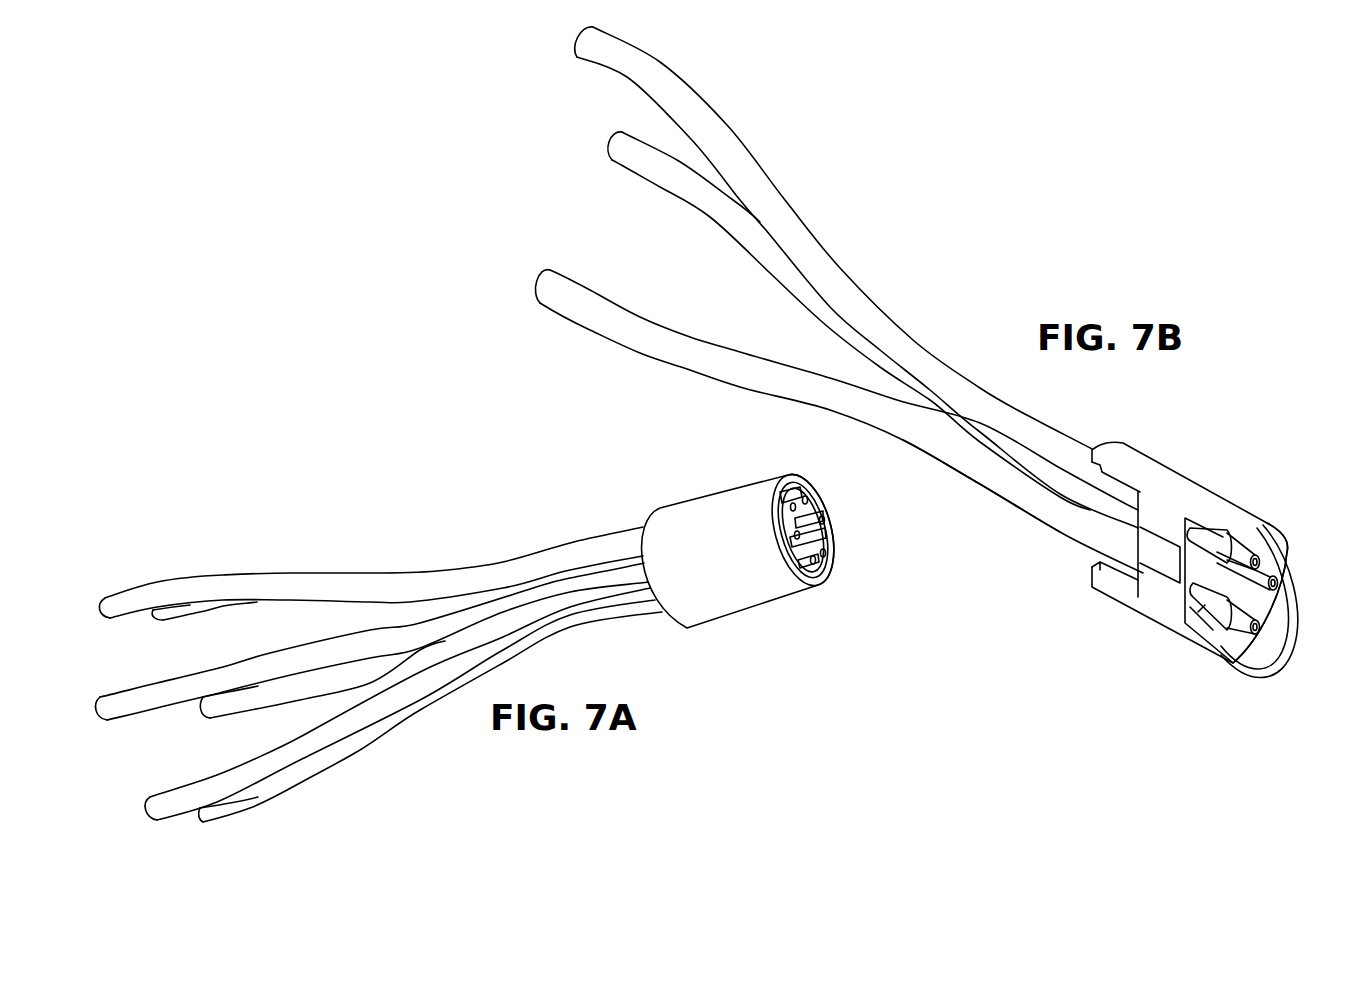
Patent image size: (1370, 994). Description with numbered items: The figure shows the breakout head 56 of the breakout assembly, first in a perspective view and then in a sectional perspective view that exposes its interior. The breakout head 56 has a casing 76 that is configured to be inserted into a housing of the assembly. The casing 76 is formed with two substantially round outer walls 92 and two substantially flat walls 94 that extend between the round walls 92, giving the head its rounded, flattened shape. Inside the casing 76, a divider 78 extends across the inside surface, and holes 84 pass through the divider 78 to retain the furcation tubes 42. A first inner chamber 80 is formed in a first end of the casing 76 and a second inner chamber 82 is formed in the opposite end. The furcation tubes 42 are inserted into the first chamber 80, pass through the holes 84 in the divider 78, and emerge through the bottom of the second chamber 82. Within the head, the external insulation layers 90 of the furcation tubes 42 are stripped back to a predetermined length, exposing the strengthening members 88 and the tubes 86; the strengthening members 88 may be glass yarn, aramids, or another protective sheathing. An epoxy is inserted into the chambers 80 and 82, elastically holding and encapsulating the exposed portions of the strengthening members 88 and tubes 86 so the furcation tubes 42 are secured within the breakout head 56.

In FIG. 7A, the furcation tubes 42 is at (412, 572).
In FIG. 7B, the furcation tubes 42 is at (968, 379).
In FIG. 7A, the breakout head 56 is at (729, 490).
In FIG. 7B, the breakout head 56 is at (1227, 497).
In FIG. 7B, the casing 76 is at (1105, 442).
In FIG. 7B, the divider 78 is at (1162, 512).
In FIG. 7B, the first inner chamber 80 is at (1123, 580).
In FIG. 7B, the second inner chamber 82 is at (1258, 592).
In FIG. 7B, the holes 84 is at (1175, 617).
In FIG. 7A, the tubes 86 is at (818, 506).
In FIG. 7B, the tubes 86 is at (1275, 590).
In FIG. 7B, the strengthening members 88 is at (1210, 632).
In FIG. 7B, the external insulation layers 90 is at (1010, 507).
In FIG. 7A, the substantially round outer walls 92 is at (705, 522).
In FIG. 7A, the substantially flat walls 94 is at (795, 476).